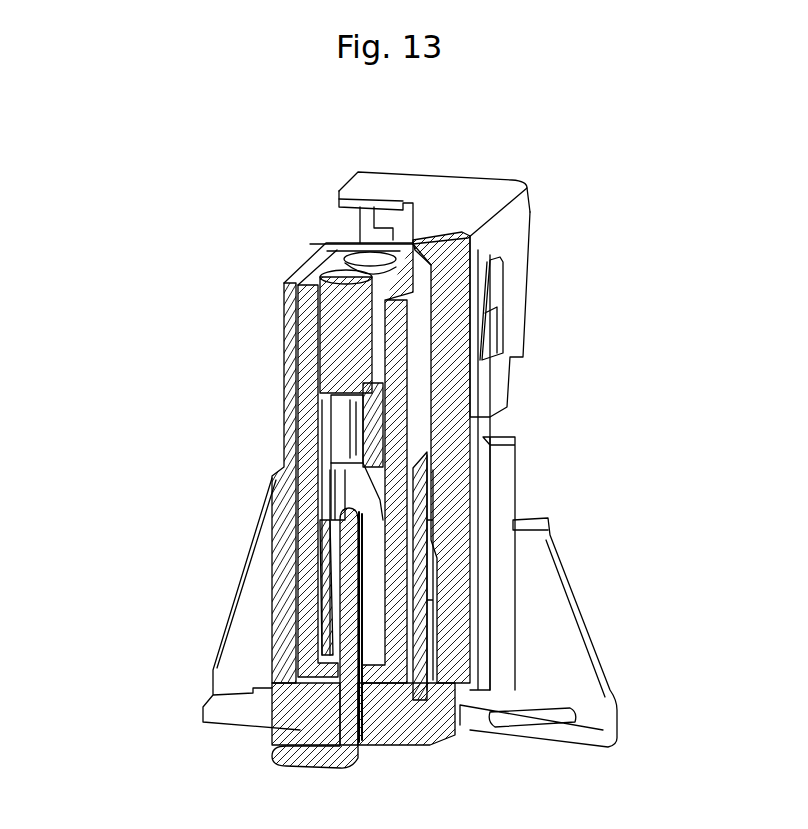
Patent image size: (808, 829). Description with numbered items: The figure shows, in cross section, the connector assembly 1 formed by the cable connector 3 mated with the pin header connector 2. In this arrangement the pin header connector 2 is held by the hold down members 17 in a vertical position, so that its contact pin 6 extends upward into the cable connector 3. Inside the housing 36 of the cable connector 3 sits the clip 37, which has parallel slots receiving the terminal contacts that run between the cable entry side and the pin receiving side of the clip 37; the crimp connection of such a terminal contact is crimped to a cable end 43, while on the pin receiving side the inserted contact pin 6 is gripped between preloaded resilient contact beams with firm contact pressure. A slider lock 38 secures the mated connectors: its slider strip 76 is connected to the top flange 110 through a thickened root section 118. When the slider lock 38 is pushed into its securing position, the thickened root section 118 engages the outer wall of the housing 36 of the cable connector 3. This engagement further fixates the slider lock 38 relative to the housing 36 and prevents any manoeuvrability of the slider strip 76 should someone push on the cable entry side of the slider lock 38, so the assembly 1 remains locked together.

The connector assembly 1 is at (230, 193).
The top flange 110 is at (482, 184).
The thickened root section 118 is at (437, 269).
The slider lock 38 is at (515, 286).
The cable connector 3 is at (510, 380).
The pin header connector 2 is at (517, 488).
The slider strip 76 is at (467, 571).
The hold down members 17 is at (563, 652).
The cable end 43 is at (326, 299).
The clip 37 is at (310, 415).
The housing 36 is at (284, 509).
The contact pin 6 is at (262, 756).